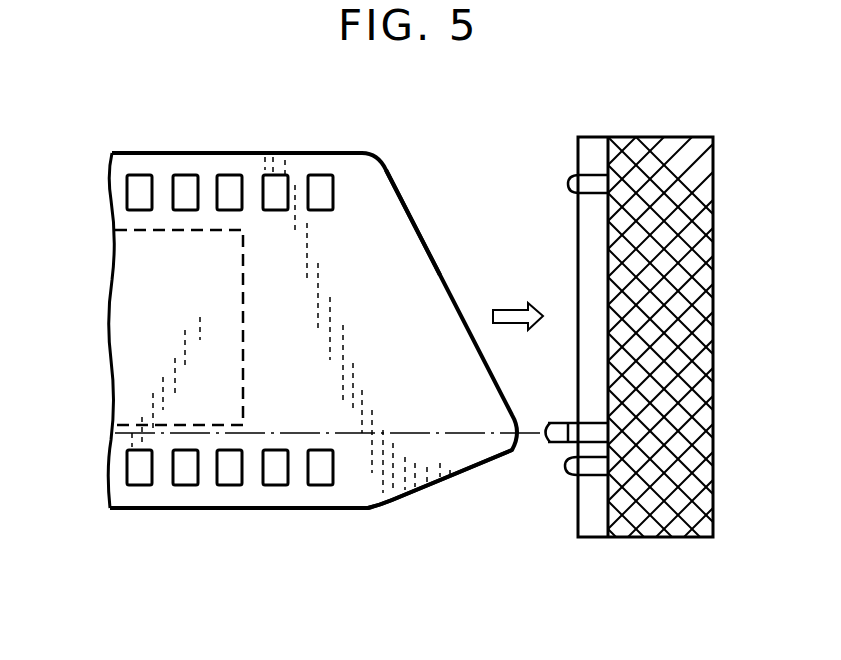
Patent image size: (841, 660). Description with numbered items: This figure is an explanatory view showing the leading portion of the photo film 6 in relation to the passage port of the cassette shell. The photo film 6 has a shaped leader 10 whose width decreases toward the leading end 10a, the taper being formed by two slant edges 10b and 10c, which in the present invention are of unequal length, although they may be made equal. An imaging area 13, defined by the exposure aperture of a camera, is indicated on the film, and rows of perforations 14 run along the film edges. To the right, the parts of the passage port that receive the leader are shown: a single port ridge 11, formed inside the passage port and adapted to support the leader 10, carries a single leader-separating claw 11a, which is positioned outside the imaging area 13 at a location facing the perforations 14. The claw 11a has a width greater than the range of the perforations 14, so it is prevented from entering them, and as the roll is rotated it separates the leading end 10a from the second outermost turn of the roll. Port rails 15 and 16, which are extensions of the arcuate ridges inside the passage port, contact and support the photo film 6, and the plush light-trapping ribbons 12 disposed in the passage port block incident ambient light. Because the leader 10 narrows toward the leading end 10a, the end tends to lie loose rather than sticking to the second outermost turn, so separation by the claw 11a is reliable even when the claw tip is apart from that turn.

The photo film 6 is at (294, 399).
The leader 10 is at (319, 352).
The leading end 10a is at (503, 458).
The slant edge 10b is at (425, 493).
The slant edge 10c is at (402, 198).
The port ridge 11 is at (550, 443).
The leader-separating claw 11a is at (533, 444).
The light-trapping ribbons 12 is at (660, 505).
The imaging area 13 is at (135, 322).
The perforations 14 is at (272, 476).
The port rail 15 is at (565, 470).
The port rail 16 is at (568, 183).